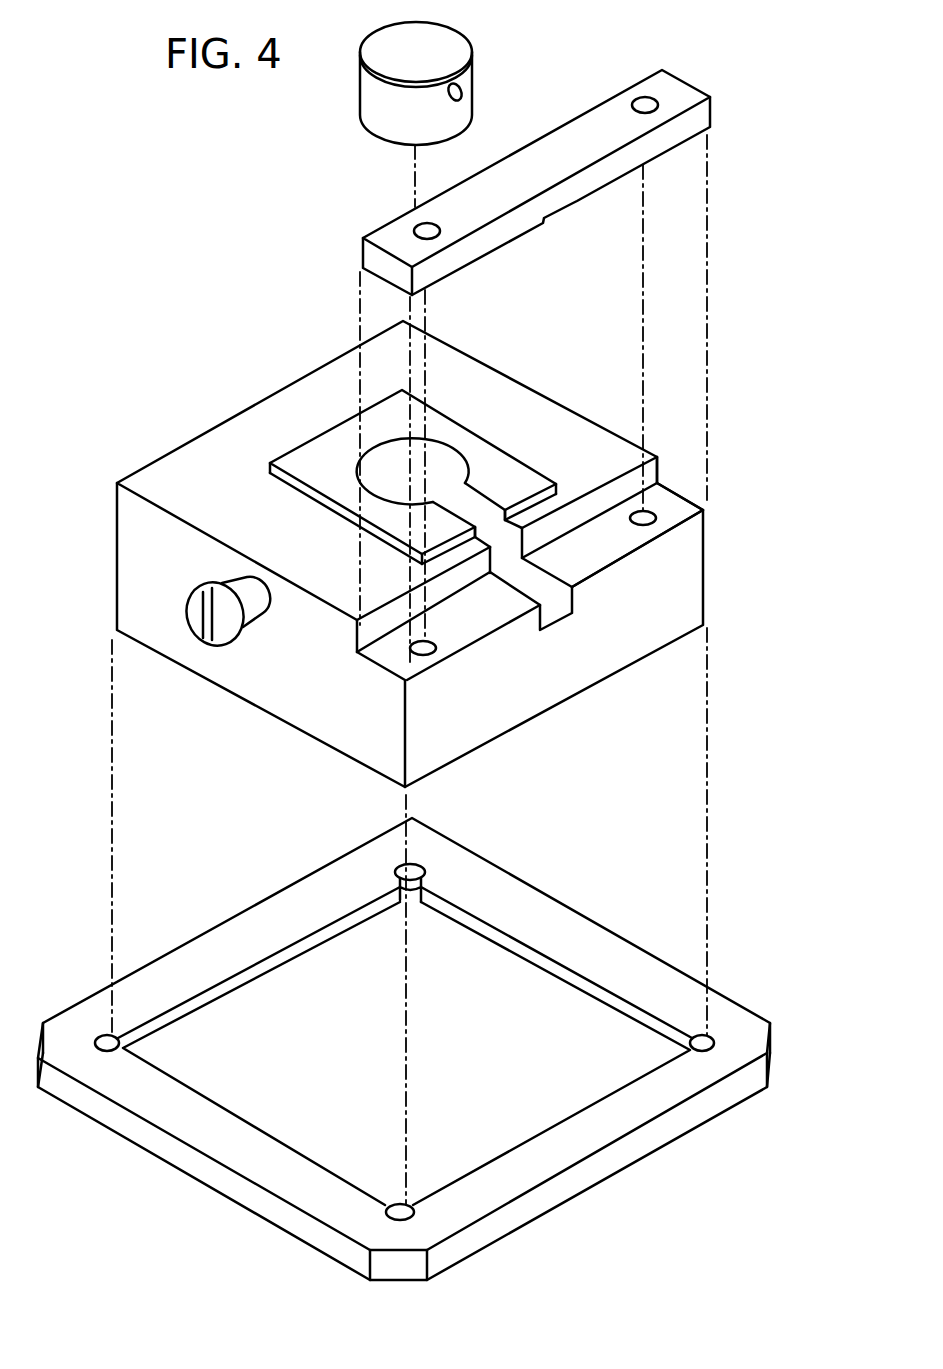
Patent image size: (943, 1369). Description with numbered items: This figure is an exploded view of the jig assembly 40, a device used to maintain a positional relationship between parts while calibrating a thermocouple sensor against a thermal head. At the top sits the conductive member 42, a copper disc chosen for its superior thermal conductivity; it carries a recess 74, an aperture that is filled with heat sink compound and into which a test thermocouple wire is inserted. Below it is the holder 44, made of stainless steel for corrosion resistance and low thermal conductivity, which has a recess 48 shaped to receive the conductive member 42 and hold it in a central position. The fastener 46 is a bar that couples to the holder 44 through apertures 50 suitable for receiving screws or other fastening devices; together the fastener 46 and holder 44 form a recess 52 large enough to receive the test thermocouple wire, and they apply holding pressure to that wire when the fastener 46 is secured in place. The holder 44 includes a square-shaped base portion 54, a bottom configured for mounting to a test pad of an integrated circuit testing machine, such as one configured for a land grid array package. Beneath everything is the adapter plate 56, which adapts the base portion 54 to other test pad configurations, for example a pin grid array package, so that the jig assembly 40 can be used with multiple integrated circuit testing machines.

The jig assembly 40 is at (158, 172).
The conductive member 42 is at (429, 63).
The holder 44 is at (252, 440).
The fastener 46 is at (687, 97).
The recess 48 is at (372, 470).
The apertures 50 is at (422, 231).
The recess 52 is at (556, 614).
The base portion 54 is at (683, 578).
The adapter plate 56 is at (662, 987).
The recess 74 is at (463, 98).